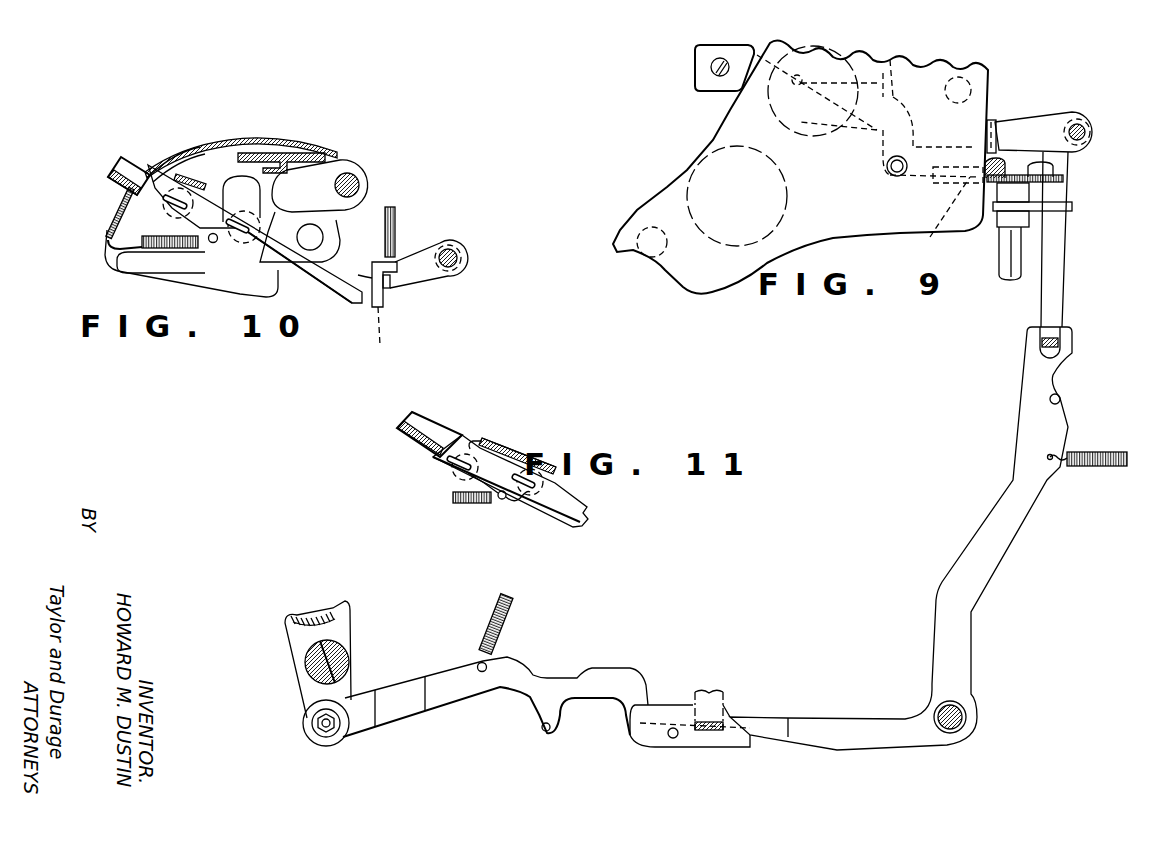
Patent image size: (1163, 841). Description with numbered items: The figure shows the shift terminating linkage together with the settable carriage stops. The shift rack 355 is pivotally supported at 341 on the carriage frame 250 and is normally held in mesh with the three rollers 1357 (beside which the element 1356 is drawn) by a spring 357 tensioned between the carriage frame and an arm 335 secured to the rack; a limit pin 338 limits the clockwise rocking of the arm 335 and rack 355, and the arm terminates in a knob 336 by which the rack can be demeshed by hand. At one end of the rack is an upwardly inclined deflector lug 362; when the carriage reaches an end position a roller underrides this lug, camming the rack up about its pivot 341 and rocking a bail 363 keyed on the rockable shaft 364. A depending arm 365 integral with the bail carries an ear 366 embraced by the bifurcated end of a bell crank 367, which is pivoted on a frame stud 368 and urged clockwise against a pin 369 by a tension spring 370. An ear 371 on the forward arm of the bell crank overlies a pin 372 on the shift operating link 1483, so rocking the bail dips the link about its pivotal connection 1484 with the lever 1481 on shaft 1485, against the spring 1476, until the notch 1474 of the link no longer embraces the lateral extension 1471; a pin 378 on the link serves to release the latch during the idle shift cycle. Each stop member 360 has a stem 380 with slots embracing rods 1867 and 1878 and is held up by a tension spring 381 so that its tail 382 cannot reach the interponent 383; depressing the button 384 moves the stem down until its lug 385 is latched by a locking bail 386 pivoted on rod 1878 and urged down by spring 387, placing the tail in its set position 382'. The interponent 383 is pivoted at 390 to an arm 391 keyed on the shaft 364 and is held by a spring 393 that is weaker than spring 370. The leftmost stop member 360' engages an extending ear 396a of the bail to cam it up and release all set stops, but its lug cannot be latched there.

In FIG. 9, the frame plate 250 is at (719, 119).
In FIG. 10, the frame plate 250 is at (309, 135).
In FIG. 9, the arm 335 is at (880, 130).
In FIG. 9, the knob 336 is at (717, 77).
In FIG. 9, the limit pin 338 is at (817, 91).
In FIG. 9, the pivot 341 is at (890, 176).
In FIG. 9, the shift rack 355 is at (955, 212).
In FIG. 9, the spring 357 is at (895, 80).
In FIG. 10, the stop member 360 is at (102, 175).
In FIG. 11, the leftmost stop member 360' is at (432, 424).
In FIG. 9, the deflector lug 362 is at (984, 158).
In FIG. 9, the bail 363 is at (993, 118).
In FIG. 9, the shift terminating shaft 364 is at (1089, 126).
In FIG. 10, the shift terminating shaft 364 is at (461, 249).
In FIG. 9, the depending arm 365 is at (1062, 291).
In FIG. 9, the ear 366 is at (1068, 342).
In FIG. 9, the bell crank 367 is at (933, 661).
In FIG. 9, the frame stud 368 is at (940, 705).
In FIG. 9, the pin 369 is at (1060, 396).
In FIG. 9, the tension spring 370 is at (1104, 452).
In FIG. 9, the ear 371 is at (660, 718).
In FIG. 9, the pin 372 is at (672, 740).
In FIG. 9, the pin 378 is at (547, 732).
In FIG. 10, the stem 380 is at (322, 288).
In FIG. 11, the stem 380 is at (563, 499).
In FIG. 10, the tension spring 381 is at (171, 249).
In FIG. 11, the tension spring 381 is at (473, 503).
In FIG. 10, the tail 382 is at (364, 307).
In FIG. 10, the pin (alternate position) 382' is at (404, 331).
In FIG. 10, the interponent 383 is at (349, 266).
In FIG. 10, the button 384 is at (128, 188).
In FIG. 11, the button 384 is at (401, 432).
In FIG. 10, the lug 385 is at (161, 165).
In FIG. 11, the lug 385 is at (472, 441).
In FIG. 10, the locking bail 386 is at (212, 172).
In FIG. 11, the locking bail 386 is at (510, 449).
In FIG. 10, the tension spring 387 is at (114, 216).
In FIG. 10, the pivot 390 is at (386, 298).
In FIG. 10, the arm 391 is at (437, 286).
In FIG. 10, the spring 393 is at (396, 226).
In FIG. 11, the strip 396a is at (483, 442).
In FIG. 9, the serrated washer 1356 is at (1063, 178).
In FIG. 9, the rollers 1357 is at (1055, 168).
In FIG. 9, the lateral extension 1471 is at (707, 718).
In FIG. 9, the notch 1474 is at (731, 714).
In FIG. 9, the spring 1476 is at (507, 615).
In FIG. 9, the lever 1481 is at (348, 682).
In FIG. 9, the shift operating link 1483 is at (518, 662).
In FIG. 9, the pivotal connection 1484 is at (322, 738).
In FIG. 9, the shaft 1485 is at (347, 652).
In FIG. 10, the rod 1867 is at (185, 178).
In FIG. 11, the rod 1867 is at (458, 467).
In FIG. 10, the rod 1878 is at (240, 240).
In FIG. 11, the rod 1878 is at (526, 495).